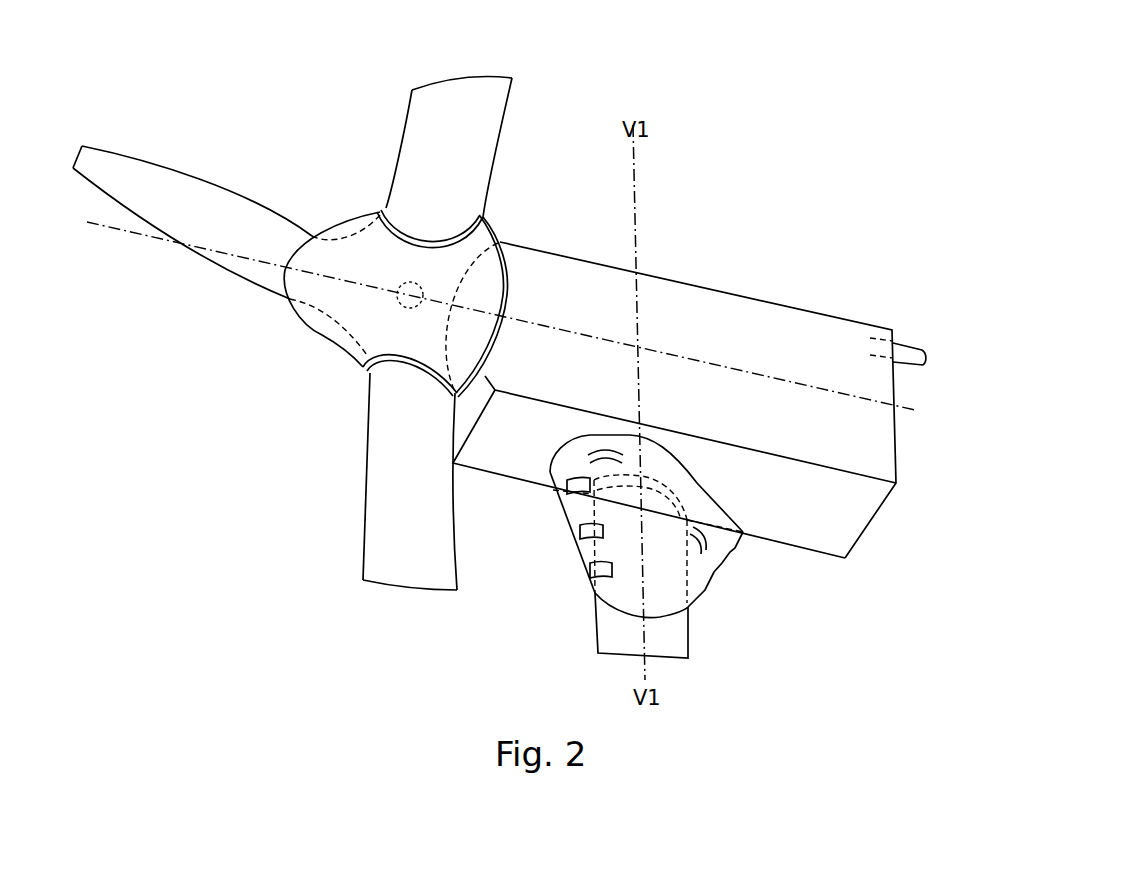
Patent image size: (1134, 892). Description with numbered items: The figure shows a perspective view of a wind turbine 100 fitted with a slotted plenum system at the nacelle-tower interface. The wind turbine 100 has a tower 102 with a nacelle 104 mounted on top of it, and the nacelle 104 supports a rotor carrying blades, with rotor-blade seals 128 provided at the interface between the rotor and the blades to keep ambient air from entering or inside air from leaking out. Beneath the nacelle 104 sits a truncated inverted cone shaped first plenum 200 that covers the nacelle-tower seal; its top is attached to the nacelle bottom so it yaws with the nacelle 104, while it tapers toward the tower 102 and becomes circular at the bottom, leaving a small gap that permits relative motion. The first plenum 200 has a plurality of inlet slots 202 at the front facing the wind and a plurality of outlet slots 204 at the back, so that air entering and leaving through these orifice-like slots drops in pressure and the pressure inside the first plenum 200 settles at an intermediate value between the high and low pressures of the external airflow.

The wind turbine 100 is at (824, 209).
The tower 102 is at (690, 649).
The nacelle 104 is at (685, 280).
The rotor-blade seals 128 is at (383, 208).
The first plenum 200 is at (701, 492).
The inlet slots 202 is at (573, 527).
The outlet slots 204 is at (735, 556).